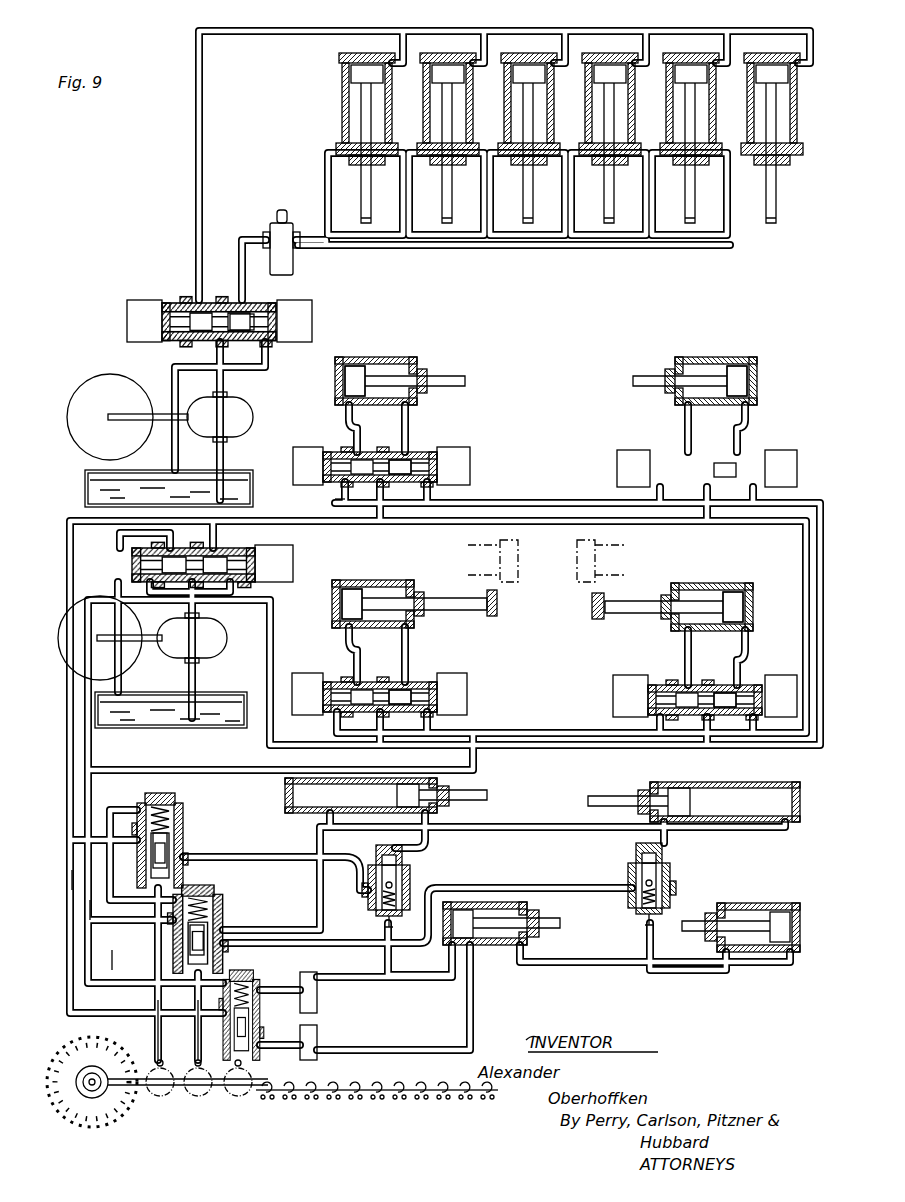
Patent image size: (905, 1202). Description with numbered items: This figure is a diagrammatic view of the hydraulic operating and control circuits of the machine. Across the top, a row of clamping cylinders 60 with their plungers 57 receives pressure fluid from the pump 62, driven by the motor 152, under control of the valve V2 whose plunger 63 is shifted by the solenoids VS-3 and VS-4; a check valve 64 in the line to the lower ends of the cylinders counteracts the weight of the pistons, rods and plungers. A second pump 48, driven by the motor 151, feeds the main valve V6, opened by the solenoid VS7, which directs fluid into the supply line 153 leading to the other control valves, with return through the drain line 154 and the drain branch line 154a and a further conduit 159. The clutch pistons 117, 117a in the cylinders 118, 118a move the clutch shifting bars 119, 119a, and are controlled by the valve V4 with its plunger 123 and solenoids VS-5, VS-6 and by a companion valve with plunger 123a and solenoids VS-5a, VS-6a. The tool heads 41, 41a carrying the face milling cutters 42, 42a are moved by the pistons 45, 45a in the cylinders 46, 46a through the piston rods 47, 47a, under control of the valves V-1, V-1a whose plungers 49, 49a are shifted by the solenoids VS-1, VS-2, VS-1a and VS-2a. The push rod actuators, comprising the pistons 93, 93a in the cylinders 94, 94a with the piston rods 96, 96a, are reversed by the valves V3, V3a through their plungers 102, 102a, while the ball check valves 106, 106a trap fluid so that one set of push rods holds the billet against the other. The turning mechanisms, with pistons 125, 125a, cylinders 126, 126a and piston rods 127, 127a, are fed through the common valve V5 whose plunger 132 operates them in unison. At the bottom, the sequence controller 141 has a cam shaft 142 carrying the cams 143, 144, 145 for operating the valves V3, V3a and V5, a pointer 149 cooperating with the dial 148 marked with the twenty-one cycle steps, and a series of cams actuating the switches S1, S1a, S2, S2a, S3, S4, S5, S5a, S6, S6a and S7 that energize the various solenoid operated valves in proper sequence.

The cylinder 60 is at (342, 118).
The plunger 57 is at (376, 220).
The check valve 64 is at (293, 265).
The plunger 63 is at (252, 311).
The valve V2 is at (226, 295).
The solenoid VS-3 is at (145, 300).
The solenoid VS-4 is at (312, 318).
The motor 152 is at (117, 380).
The pressure fluid pump 62 is at (240, 410).
The piston 117 is at (356, 364).
The cylinder 118 is at (391, 358).
The clutch shifting bar 119 is at (454, 377).
The piston 117a is at (690, 367).
The cylinder 118a is at (745, 348).
The clutch shifting bar 119a is at (640, 377).
The solenoid VS-5 is at (310, 440).
The control valve V4 is at (379, 447).
The plunger 123 is at (410, 460).
The solenoid VS-6 is at (470, 440).
The solenoid VS-5a is at (630, 450).
The plunger 123a is at (700, 462).
The solenoid VS-6a is at (779, 450).
The conduit 159 is at (333, 513).
The main valve V6 is at (243, 543).
The solenoid VS7 is at (293, 562).
The motor 151 is at (132, 664).
The pressure fluid pump 48 is at (216, 656).
The piston 45 is at (394, 581).
The cylinder 46 is at (353, 587).
The piston rod 47 is at (448, 612).
The multiple spindle tool head 41 is at (500, 618).
The face milling cutter 42 is at (516, 584).
The face milling cutter 42a is at (579, 572).
The solenoid VS-1 is at (312, 665).
The valve V-1 is at (379, 676).
The plunger 49 is at (414, 688).
The solenoid VS-2 is at (467, 696).
The piston 45a is at (751, 612).
The cylinder 46a is at (697, 575).
The piston rod 47a is at (641, 616).
The multiple spindle tool head 41a is at (596, 620).
The solenoid VS-2a is at (620, 678).
The valve V-1a is at (670, 675).
The plunger 49a is at (701, 690).
The solenoid VS-1a is at (784, 675).
The reversing valve V3 is at (189, 797).
The plunger 102 is at (177, 836).
The control valve V3a is at (229, 891).
The plunger 102a is at (218, 930).
The control valve V5 is at (261, 979).
The plunger 132 is at (254, 1020).
The drain line 154 is at (128, 894).
The supply line 153 is at (132, 924).
The drain branch line 154a is at (156, 954).
The cylinder 94 is at (285, 798).
The piston 93 is at (397, 800).
The piston rod 96 is at (487, 798).
The cylinder 94a is at (776, 782).
The piston 93a is at (688, 787).
The piston rod 96a is at (617, 794).
The ball check valve 106 is at (418, 866).
The check valve 106a is at (675, 876).
The cylinder 126 is at (529, 906).
The piston 125 is at (465, 907).
The piston rod 127 is at (560, 928).
The hydraulic cylinder 126a is at (735, 898).
The piston 125a is at (779, 912).
The piston rod 127a is at (684, 935).
The dial 148 is at (102, 1120).
The sequence controller 141 is at (175, 1108).
The cam 143 is at (155, 1093).
The cam 144 is at (194, 1098).
The cam 145 is at (238, 1100).
The pointer 149 is at (156, 1050).
The cam shaft 142 is at (193, 1080).
The electrical switch S1 is at (271, 1106).
The electrical switch S4 is at (295, 1106).
The electrical switch S1a is at (314, 1106).
The electrical switch S2 is at (336, 1106).
The electrical switch S2a is at (357, 1106).
The electrical switch S3 is at (379, 1106).
The electrical switch S5 is at (403, 1106).
The electrical switch S6 is at (422, 1106).
The electrical switch S6a is at (445, 1106).
The electrical switch S5a is at (467, 1106).
The electrical switch S7 is at (489, 1106).